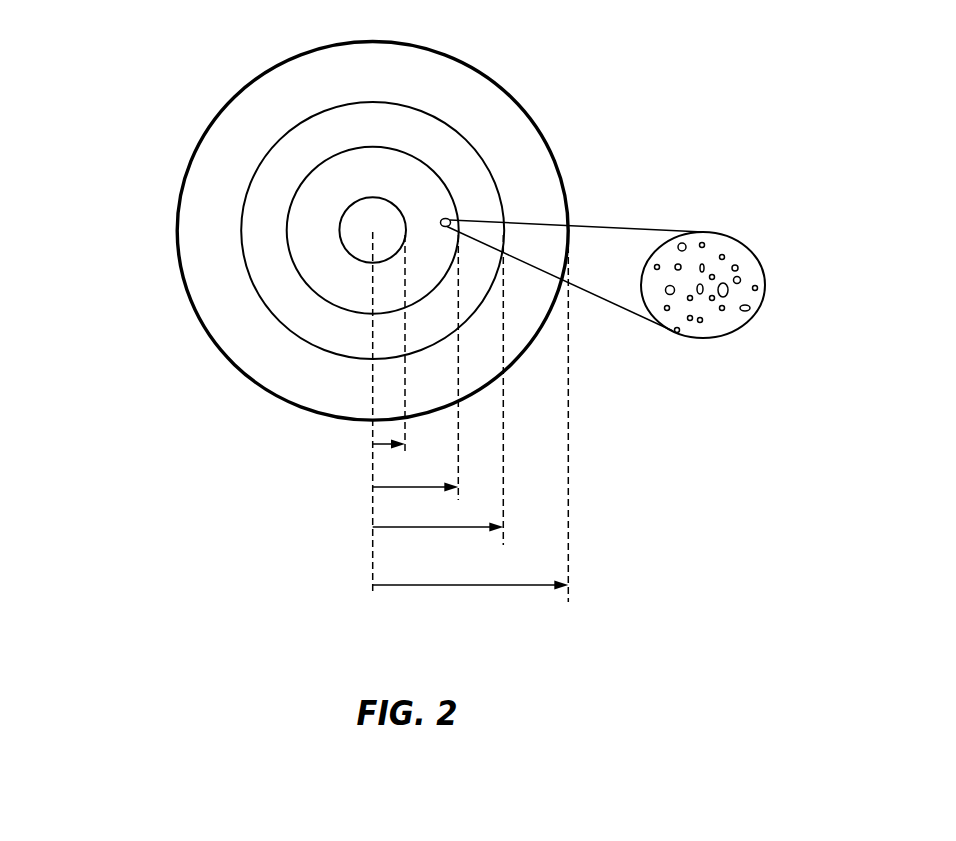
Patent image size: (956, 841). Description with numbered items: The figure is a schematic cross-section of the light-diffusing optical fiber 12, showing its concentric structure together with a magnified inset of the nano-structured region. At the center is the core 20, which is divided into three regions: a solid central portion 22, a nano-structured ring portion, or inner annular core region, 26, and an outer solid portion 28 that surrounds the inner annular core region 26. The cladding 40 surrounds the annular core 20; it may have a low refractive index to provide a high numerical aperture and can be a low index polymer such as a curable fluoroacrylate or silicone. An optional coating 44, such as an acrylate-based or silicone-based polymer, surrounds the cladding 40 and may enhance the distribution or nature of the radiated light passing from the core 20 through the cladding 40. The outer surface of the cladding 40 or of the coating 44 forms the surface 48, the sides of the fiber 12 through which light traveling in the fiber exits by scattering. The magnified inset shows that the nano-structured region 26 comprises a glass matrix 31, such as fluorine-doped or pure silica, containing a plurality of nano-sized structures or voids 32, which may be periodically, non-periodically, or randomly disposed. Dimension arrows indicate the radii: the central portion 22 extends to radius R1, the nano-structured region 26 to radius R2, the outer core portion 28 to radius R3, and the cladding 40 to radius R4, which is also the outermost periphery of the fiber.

The light-diffusing optical fiber 12 is at (203, 78).
The core 20 is at (685, 74).
The solid central portion 22 is at (385, 222).
The nano-structured ring portion 26 is at (425, 182).
The outer solid portion 28 is at (432, 142).
The glass matrix 31 is at (722, 243).
The nano-sized structures 32 is at (690, 322).
The cladding 40 is at (480, 98).
The coating 44 is at (463, 58).
The surface 48 is at (183, 180).
The outer radius of first core region R1 is at (377, 443).
The outer radius of nano-structured region R2 is at (403, 487).
The outer radius of third core region R3 is at (410, 527).
The outer radius of cladding R4 is at (443, 585).